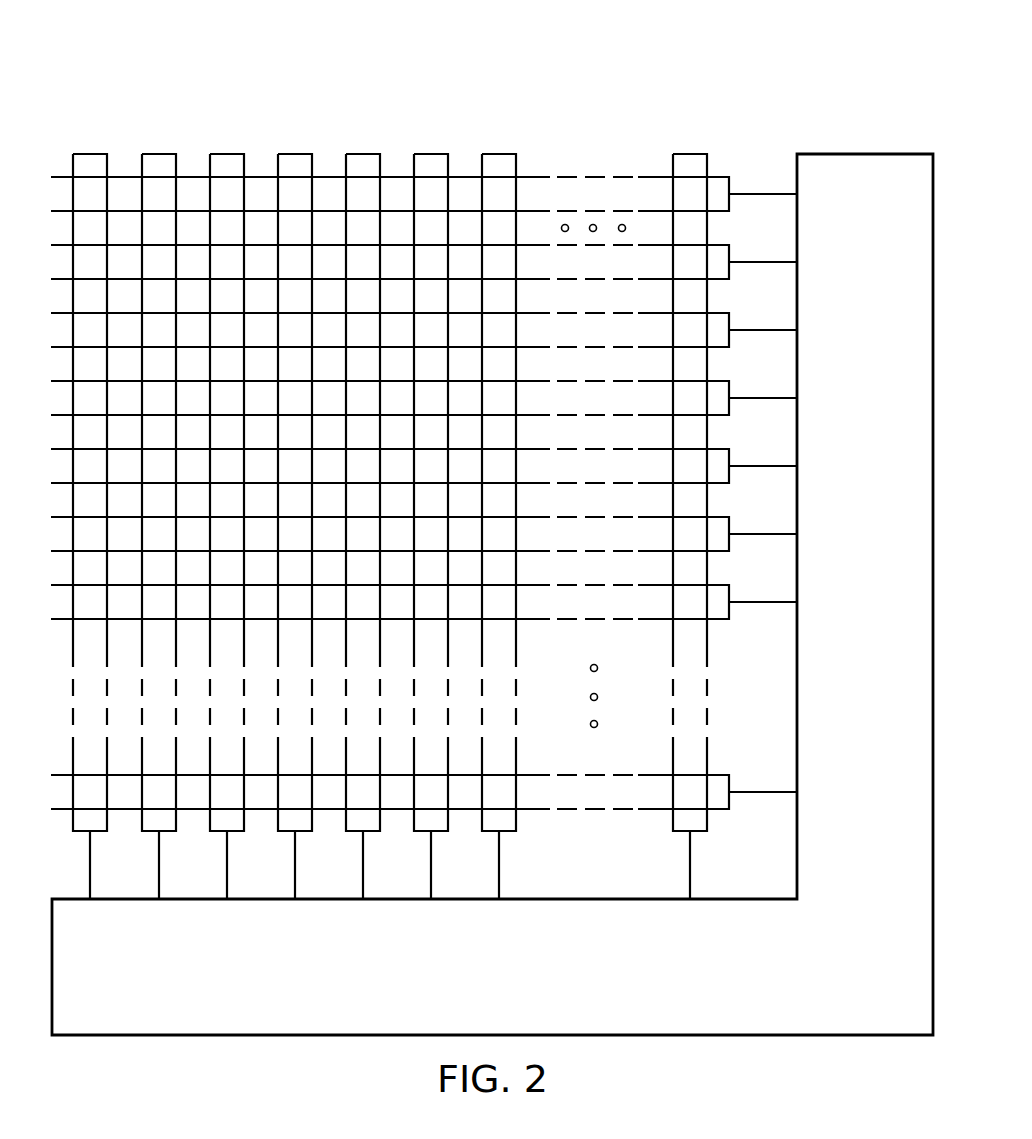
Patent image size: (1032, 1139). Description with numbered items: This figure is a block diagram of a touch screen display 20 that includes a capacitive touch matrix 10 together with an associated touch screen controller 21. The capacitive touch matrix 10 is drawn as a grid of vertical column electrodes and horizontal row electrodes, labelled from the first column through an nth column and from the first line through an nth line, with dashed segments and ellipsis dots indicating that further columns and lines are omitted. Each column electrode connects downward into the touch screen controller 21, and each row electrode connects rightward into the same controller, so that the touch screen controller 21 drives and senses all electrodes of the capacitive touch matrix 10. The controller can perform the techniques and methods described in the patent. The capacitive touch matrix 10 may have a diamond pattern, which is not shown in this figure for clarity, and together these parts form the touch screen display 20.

The touch screen display 20 is at (218, 73).
The capacitive touch matrix 10 is at (64, 164).
The touch screen controller 21 is at (506, 997).